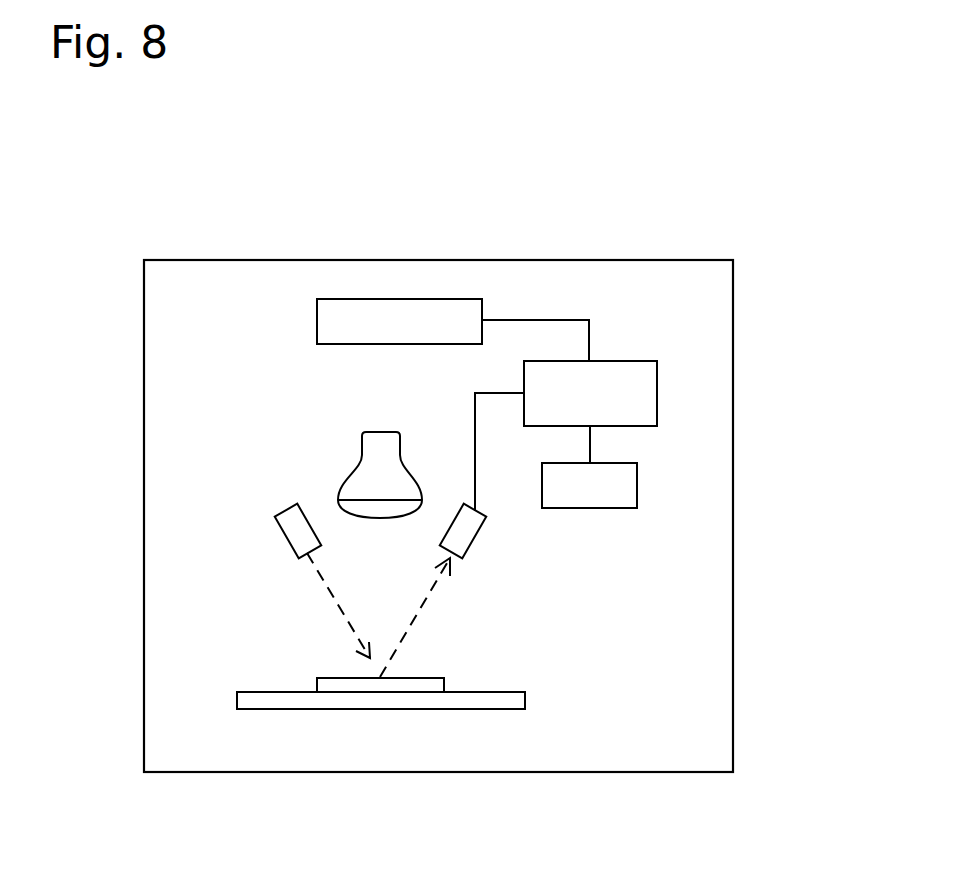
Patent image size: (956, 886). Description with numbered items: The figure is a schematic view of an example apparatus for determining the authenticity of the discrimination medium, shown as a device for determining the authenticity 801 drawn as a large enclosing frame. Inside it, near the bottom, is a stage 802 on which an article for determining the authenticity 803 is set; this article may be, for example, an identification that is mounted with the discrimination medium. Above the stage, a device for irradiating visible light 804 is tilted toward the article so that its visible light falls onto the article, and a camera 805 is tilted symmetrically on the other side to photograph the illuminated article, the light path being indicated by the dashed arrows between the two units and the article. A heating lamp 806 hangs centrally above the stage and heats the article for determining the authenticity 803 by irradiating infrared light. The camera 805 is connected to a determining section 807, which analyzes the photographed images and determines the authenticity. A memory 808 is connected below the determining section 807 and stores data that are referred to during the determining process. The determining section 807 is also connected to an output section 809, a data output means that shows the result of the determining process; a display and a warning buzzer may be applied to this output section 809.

The device for determining the authenticity 801 is at (253, 260).
The stage 802 is at (290, 702).
The article for determining the authenticity 803 is at (420, 684).
The device for irradiating visible light 804 is at (293, 538).
The camera 805 is at (462, 540).
The heating lamp 806 is at (372, 452).
The determining section 807 is at (642, 412).
The memory 808 is at (627, 497).
The output section 809 is at (473, 308).